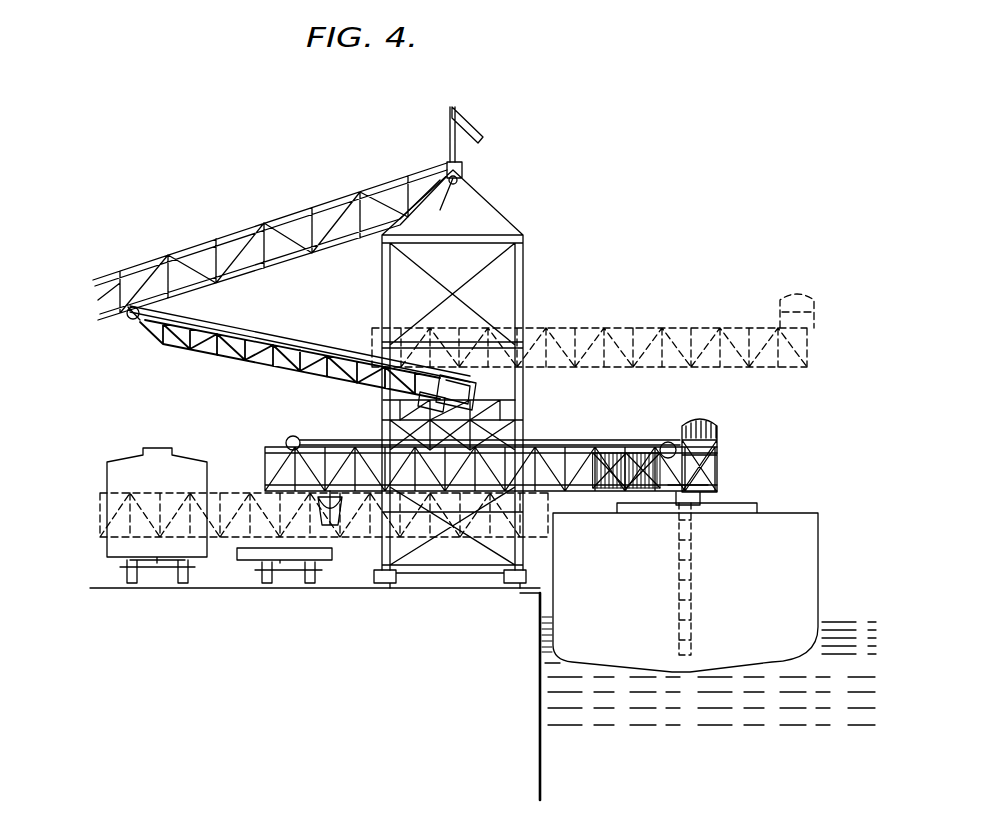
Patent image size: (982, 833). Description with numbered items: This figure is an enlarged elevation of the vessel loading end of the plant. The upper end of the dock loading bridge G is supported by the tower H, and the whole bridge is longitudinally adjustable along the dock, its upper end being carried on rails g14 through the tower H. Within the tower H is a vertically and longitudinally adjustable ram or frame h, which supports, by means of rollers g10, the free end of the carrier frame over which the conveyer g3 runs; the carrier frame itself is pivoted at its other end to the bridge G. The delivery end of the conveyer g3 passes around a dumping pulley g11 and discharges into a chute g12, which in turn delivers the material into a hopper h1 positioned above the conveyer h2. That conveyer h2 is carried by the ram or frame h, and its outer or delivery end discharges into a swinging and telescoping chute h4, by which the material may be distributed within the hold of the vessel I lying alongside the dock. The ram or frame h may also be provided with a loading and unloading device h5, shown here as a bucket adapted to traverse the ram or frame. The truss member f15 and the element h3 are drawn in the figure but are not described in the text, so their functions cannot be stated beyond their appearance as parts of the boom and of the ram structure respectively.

The bridge G is at (270, 241).
The tower H is at (524, 283).
The ram or frame h is at (586, 493).
The conveyer g3 is at (282, 336).
The lower boom truss f15 is at (268, 360).
The dumping pulley g11 is at (462, 380).
The chute g12 is at (470, 397).
The rollers g10 is at (440, 409).
The hopper h1 is at (500, 431).
The conveyer h2 is at (628, 452).
The operator's cab h3 is at (717, 462).
The swinging and telescoping chute h4 is at (693, 551).
The loading and unloading device h5 is at (334, 526).
The vessel I is at (665, 596).
The rails g14 is at (512, 580).